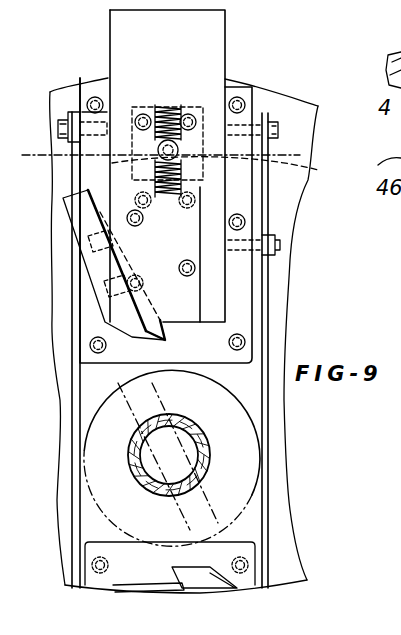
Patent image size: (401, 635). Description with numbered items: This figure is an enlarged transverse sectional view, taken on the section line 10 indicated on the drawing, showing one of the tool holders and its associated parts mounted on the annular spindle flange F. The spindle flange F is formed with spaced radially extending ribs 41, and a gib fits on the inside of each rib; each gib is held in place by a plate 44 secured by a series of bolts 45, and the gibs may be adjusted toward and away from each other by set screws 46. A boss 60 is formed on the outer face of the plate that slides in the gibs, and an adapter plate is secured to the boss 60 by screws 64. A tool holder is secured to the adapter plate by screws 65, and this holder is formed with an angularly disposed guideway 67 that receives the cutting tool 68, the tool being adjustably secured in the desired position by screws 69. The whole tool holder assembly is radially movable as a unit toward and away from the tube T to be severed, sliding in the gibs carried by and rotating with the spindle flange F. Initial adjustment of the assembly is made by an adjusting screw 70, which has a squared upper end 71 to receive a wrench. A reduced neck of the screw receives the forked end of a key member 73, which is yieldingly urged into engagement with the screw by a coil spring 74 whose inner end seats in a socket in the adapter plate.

The section line 10 is at (41, 143).
The radially extending ribs 41 is at (258, 393).
The plate 44 is at (247, 302).
The bolts 45 is at (248, 342).
The set screws 46 is at (272, 240).
The boss 60 is at (197, 217).
The screws 64 is at (182, 92).
The screws 65 is at (200, 268).
The guideway 67 is at (90, 200).
The cutting tool 68 is at (145, 335).
The screws 69 is at (110, 298).
The adjusting screw 70 is at (172, 106).
The squared upper end 71 is at (168, 108).
The key member 73 is at (228, 173).
The coil spring 74 is at (150, 158).
The tape hub T is at (210, 460).
The spindle flange F is at (287, 513).